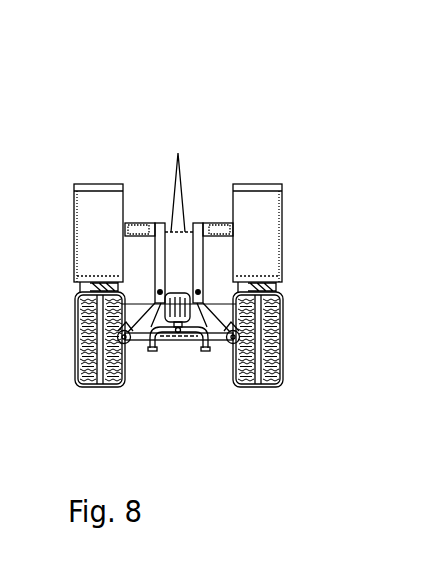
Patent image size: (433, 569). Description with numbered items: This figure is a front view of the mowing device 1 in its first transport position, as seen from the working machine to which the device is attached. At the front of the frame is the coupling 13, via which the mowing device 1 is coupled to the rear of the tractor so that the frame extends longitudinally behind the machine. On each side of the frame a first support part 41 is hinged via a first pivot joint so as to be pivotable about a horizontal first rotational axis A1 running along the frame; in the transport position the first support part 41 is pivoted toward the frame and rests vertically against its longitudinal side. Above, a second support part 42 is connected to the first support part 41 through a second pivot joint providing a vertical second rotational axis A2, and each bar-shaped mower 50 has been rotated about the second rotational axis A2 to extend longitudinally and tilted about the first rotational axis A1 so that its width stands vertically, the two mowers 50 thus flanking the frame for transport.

The mowing device 1 is at (172, 79).
The coupling 13 is at (199, 342).
The first support part 41 is at (154, 292).
The second support part 42 is at (138, 222).
The bar-shaped mower 50 is at (74, 183).
The first rotational axis A1 is at (131, 333).
The second rotational axis A2 is at (174, 181).